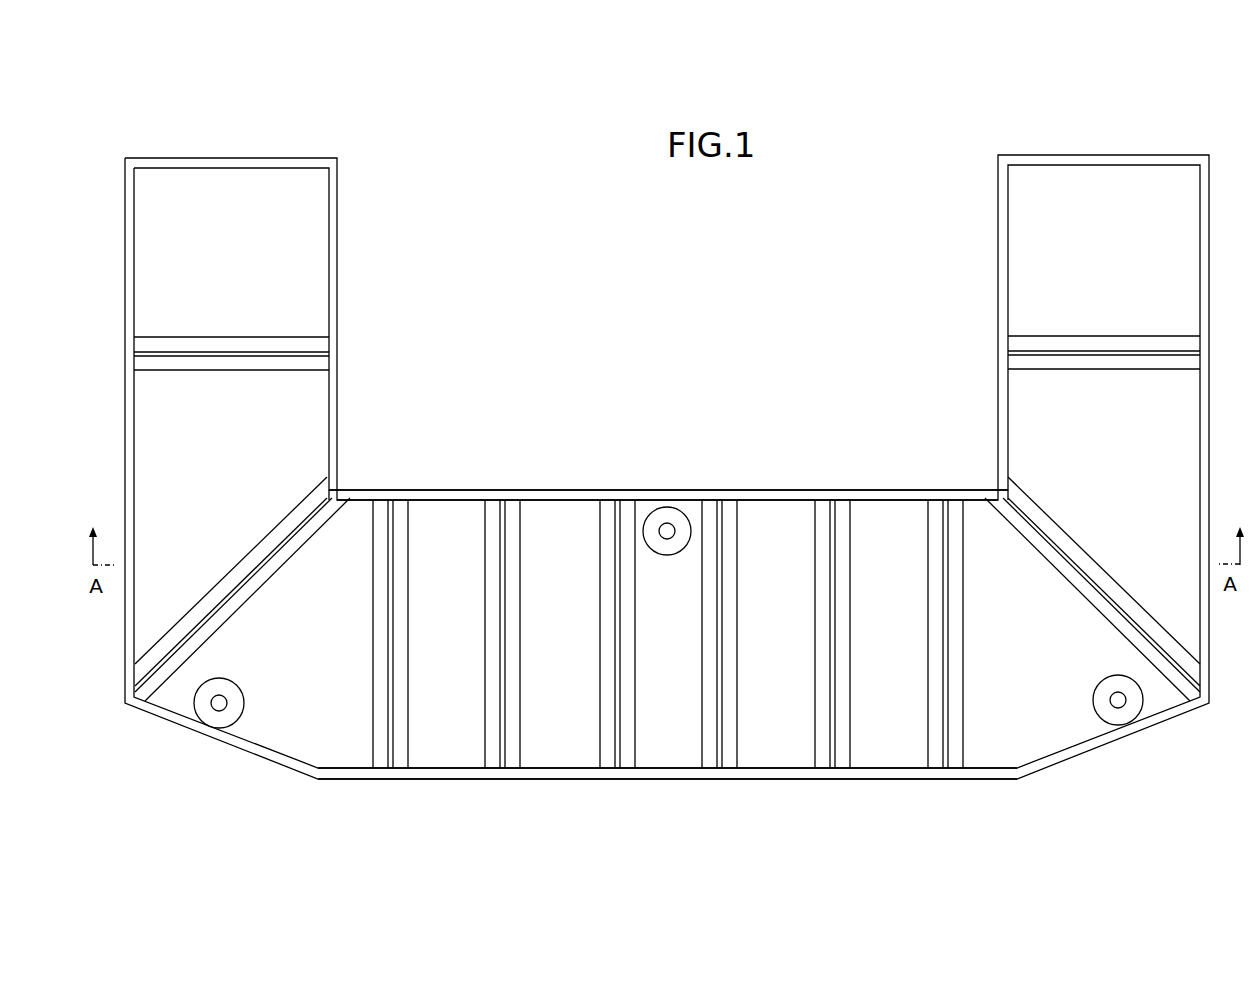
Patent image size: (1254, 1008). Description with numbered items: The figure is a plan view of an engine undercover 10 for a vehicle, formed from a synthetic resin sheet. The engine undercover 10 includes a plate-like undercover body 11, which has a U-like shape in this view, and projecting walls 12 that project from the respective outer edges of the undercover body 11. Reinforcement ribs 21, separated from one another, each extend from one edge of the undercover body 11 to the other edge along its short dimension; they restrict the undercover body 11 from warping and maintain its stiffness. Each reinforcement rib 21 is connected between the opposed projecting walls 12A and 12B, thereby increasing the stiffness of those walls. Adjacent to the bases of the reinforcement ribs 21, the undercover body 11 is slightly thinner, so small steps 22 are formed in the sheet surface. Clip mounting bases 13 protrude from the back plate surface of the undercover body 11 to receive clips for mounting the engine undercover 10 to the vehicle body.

The engine undercover 10 is at (186, 128).
The undercover body 11 is at (440, 520).
The projecting walls 12 is at (775, 490).
The projecting wall 12A is at (880, 494).
The projecting wall 12B is at (875, 773).
The clip mounting bases 13 is at (661, 518).
The reinforcement ribs 21 is at (392, 745).
The small steps 22 is at (607, 735).